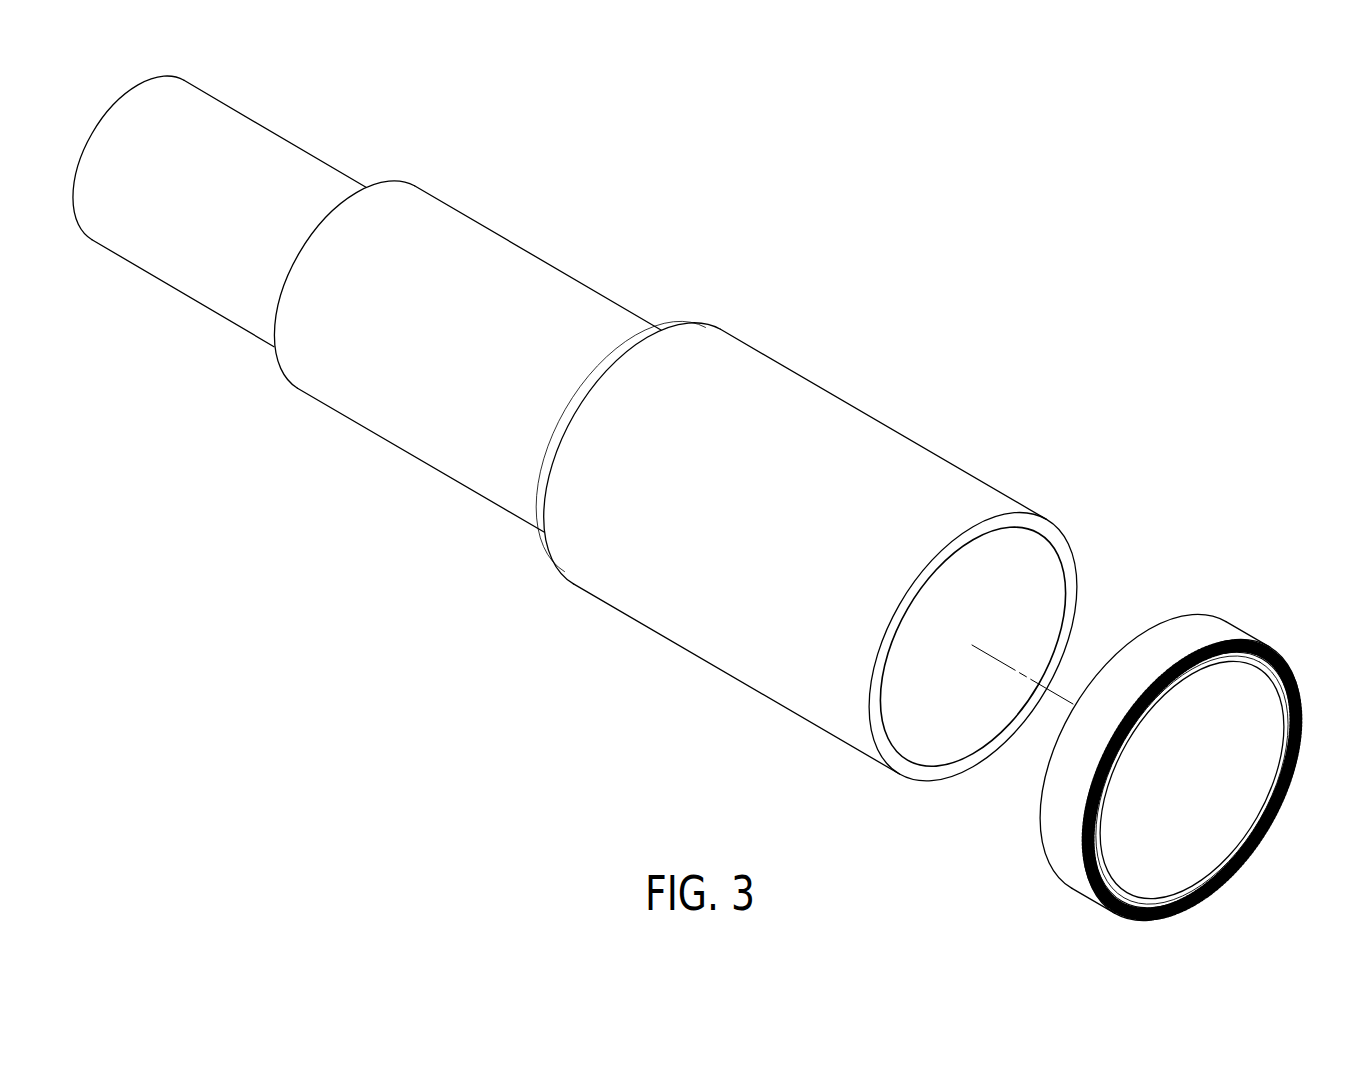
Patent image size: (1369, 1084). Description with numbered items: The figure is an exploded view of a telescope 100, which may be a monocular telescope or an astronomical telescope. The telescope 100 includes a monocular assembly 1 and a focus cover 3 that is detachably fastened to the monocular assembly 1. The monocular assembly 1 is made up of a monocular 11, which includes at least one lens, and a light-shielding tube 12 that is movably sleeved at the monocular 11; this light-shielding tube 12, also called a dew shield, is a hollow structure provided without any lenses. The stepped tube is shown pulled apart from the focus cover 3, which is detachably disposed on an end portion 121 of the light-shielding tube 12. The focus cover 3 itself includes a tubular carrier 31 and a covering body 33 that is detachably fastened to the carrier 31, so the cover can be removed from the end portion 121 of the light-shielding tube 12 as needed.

The telescope 100 is at (1242, 311).
The monocular assembly 1 is at (697, 217).
The monocular 11 is at (596, 291).
The light-shielding tube 12 is at (776, 363).
The end portion 121 is at (992, 508).
The focus cover 3 is at (1235, 627).
The tubular carrier 31 is at (1070, 857).
The covering body 33 is at (1250, 812).